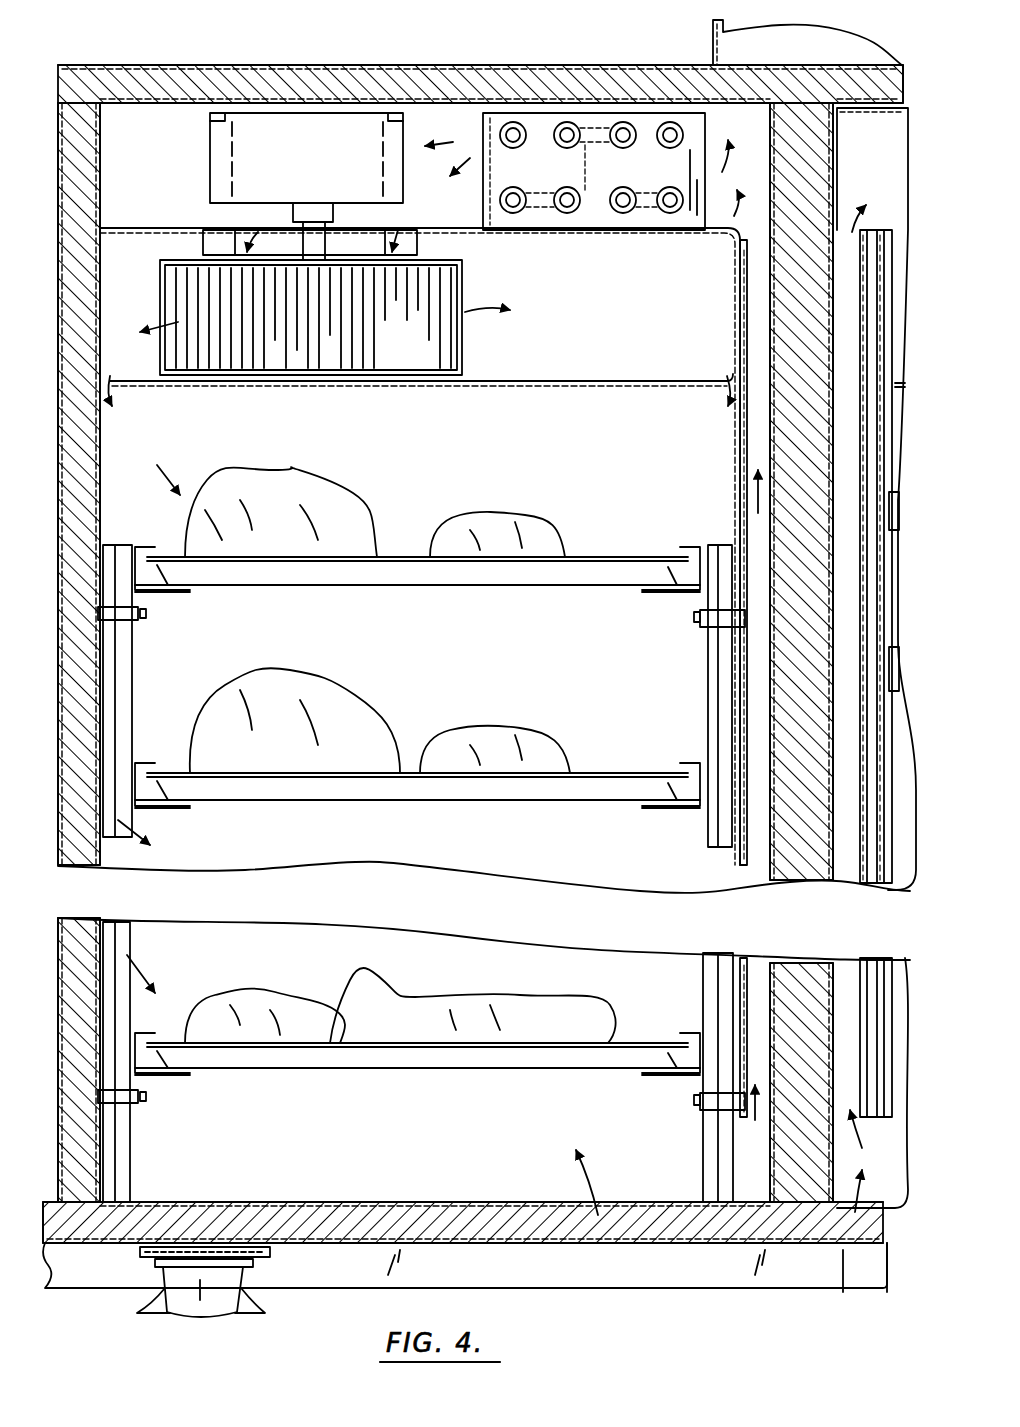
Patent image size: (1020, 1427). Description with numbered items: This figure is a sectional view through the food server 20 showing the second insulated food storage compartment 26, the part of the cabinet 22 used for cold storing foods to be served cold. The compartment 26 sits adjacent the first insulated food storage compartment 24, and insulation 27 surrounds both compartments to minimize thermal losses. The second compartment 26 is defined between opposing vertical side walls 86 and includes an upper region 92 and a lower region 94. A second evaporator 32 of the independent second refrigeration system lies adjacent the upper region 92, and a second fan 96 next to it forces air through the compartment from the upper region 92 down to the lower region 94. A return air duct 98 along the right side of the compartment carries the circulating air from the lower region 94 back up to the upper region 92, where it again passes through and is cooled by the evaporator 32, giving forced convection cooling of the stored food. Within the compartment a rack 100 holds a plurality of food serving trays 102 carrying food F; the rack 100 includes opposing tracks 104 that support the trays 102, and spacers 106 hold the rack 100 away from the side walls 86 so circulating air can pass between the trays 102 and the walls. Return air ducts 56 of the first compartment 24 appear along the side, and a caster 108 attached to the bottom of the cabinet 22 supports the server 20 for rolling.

The food server 20 is at (457, 52).
The cabinet 22 is at (318, 65).
The first insulated food storage compartment 24 is at (843, 1292).
The second insulated food storage compartment 26 is at (620, 1250).
The insulation 27 is at (611, 80).
The second evaporator 32 is at (600, 232).
The return air ducts 56 is at (861, 884).
The vertical side walls 86 is at (100, 445).
The upper region 92 is at (410, 478).
The lower region 94 is at (370, 1168).
The second fan 96 is at (463, 289).
The return air duct 98 is at (742, 308).
The rack 100 is at (706, 680).
The food serving trays 102 is at (504, 587).
The opposing tracks 104 is at (688, 545).
The spacers 106 is at (135, 621).
The casters 108 is at (248, 1315).
The food F is at (392, 717).